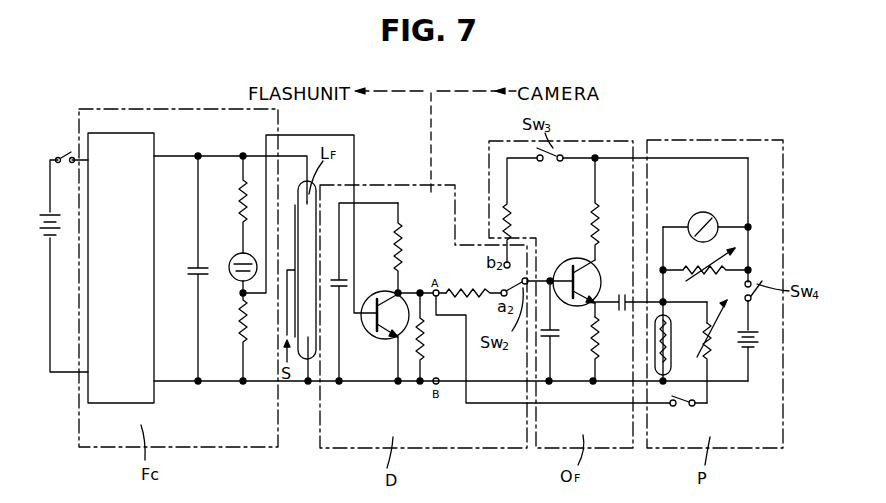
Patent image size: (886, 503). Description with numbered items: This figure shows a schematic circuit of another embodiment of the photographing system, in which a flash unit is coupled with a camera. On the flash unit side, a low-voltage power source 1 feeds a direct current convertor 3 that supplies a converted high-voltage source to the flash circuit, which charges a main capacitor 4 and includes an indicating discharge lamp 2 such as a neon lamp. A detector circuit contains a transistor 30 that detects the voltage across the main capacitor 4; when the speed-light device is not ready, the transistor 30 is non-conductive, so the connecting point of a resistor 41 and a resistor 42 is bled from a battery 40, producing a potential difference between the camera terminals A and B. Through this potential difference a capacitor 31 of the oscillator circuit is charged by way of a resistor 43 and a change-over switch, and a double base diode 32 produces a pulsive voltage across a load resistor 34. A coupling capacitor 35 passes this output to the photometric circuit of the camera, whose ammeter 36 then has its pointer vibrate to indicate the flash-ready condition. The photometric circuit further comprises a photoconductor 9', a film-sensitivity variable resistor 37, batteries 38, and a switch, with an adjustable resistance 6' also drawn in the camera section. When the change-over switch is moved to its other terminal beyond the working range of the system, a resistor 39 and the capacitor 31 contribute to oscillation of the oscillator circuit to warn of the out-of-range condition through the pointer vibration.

The power source 1 is at (45, 210).
The indicating discharge lamp 2 is at (233, 256).
The direct current convertor 3 is at (128, 140).
The main capacitor 4 is at (200, 262).
The transistor 30 is at (360, 296).
The capacitor 31 is at (554, 333).
The double base diode 32 is at (566, 256).
The load resistor 34 is at (587, 328).
The coupling capacitor 35 is at (610, 287).
The ammeter 36 is at (720, 212).
The film-sensitivity variable resistor 37 is at (716, 276).
The batteries 38 is at (753, 328).
The resistor 39 is at (508, 202).
The battery 40 is at (342, 277).
The resistor 41 is at (403, 250).
The resistor 42 is at (428, 341).
The resistor 43 is at (472, 290).
The photoconductor 9' is at (643, 348).
The variable resistor 6' is at (700, 340).